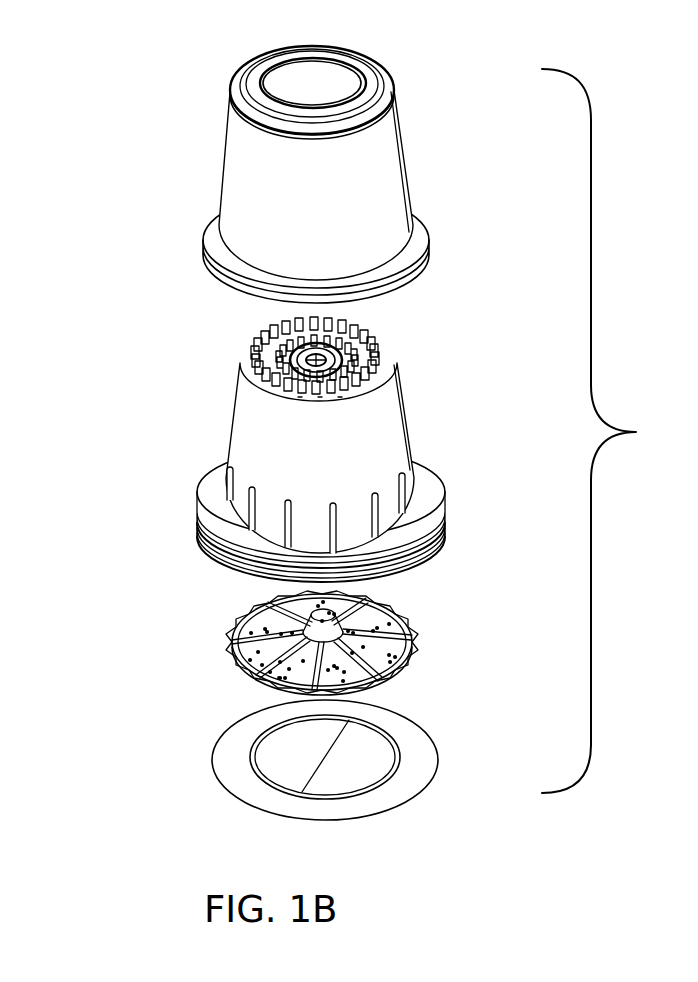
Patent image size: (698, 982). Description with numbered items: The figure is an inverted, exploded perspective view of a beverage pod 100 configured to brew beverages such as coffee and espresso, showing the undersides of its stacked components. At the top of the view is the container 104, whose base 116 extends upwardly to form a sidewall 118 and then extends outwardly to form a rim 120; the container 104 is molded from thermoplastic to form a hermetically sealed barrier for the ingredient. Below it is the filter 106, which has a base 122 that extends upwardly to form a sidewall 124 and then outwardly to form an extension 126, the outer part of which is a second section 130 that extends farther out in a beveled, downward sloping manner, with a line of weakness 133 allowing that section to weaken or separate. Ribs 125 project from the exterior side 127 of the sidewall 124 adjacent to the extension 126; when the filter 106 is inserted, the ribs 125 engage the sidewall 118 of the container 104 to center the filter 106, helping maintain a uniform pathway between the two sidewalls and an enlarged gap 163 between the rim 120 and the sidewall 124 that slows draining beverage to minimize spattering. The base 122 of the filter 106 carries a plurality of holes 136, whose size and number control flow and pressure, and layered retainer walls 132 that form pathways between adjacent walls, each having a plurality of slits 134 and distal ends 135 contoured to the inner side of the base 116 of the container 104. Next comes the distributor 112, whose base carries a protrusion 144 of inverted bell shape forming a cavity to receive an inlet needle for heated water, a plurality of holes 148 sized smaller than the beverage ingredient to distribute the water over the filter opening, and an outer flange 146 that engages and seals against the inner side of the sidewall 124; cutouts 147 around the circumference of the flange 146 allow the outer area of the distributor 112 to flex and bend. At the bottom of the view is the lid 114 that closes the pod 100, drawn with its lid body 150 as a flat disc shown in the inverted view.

The pod 100 is at (634, 432).
The container 104 is at (197, 200).
The filter 106 is at (195, 418).
The distributor 112 is at (122, 690).
The lid 114 is at (200, 772).
The base 116 is at (297, 88).
The sidewall 118 is at (245, 152).
The rim 120 is at (210, 268).
The base 122 is at (375, 368).
The sidewall 124 is at (385, 435).
The ribs 125 is at (415, 485).
The extension 126 is at (455, 528).
The exterior side 127 is at (245, 410).
The second section 130 is at (200, 480).
The retainer wall 132 is at (250, 352).
The line of weakness 133 is at (220, 513).
The slits 134 is at (320, 397).
The distal ends 135 is at (370, 345).
The holes 136 is at (280, 328).
The protrusion 144 is at (330, 612).
The flange 146 is at (420, 665).
The cutouts 147 is at (400, 680).
The holes 148 is at (385, 605).
The lid body 150 is at (278, 805).
The gap 163 is at (410, 640).